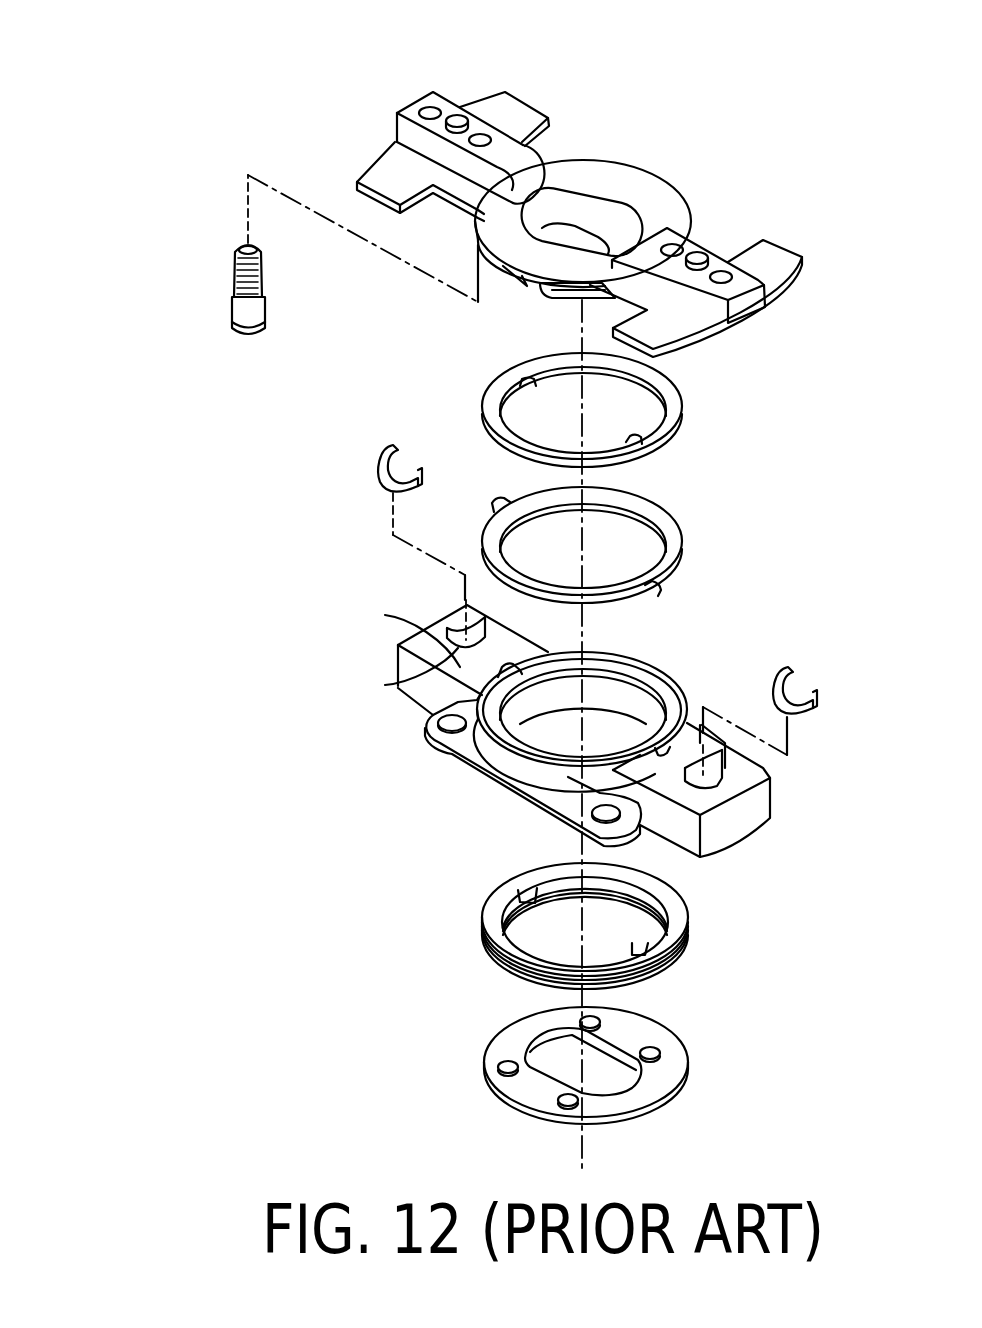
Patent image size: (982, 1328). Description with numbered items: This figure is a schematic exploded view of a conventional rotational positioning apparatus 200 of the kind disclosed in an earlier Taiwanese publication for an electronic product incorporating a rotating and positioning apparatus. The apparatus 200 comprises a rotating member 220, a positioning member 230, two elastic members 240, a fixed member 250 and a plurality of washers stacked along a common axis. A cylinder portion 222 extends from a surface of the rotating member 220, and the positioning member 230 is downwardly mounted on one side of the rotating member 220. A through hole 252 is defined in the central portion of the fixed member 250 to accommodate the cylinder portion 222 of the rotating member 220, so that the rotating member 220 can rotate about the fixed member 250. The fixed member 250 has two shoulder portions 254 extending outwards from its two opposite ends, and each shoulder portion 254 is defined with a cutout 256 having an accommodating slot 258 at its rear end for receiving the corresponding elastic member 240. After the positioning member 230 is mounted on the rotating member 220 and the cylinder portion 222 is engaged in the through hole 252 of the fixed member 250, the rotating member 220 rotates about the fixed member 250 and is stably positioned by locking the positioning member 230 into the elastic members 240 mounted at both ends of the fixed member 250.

The rotational positioning apparatus 200 is at (272, 42).
The rotating member 220 is at (700, 375).
The cylinder portion 222 is at (548, 298).
The positioning member 230 is at (233, 278).
The elastic member 240 is at (382, 484).
The fixed member 250 is at (541, 737).
The through hole 252 is at (558, 716).
The shoulder portion 254 is at (400, 683).
The cutout 256 is at (450, 630).
The accommodating slot 258 is at (403, 640).